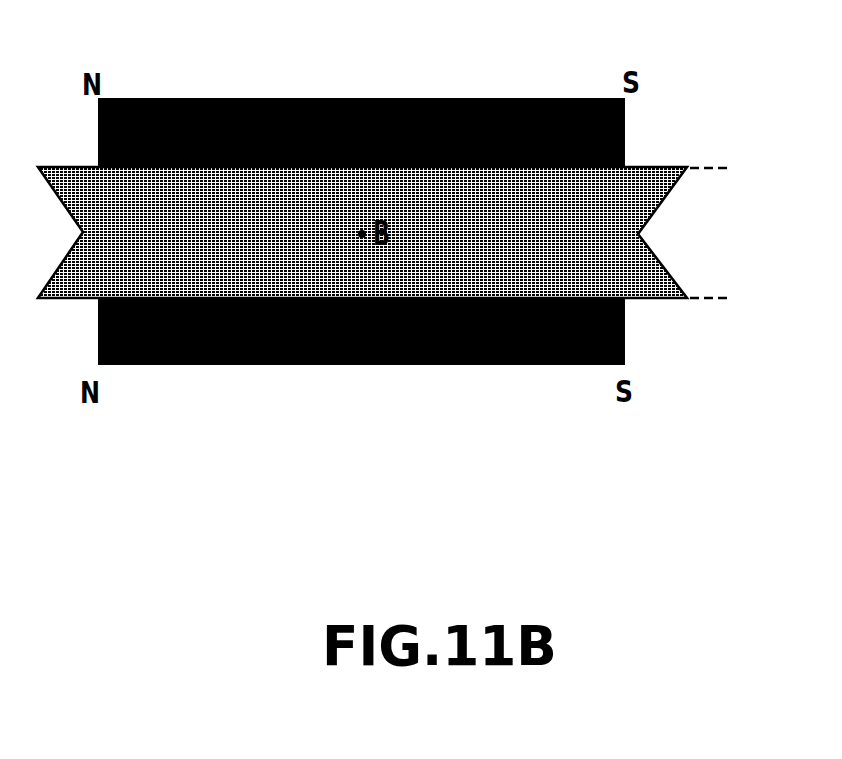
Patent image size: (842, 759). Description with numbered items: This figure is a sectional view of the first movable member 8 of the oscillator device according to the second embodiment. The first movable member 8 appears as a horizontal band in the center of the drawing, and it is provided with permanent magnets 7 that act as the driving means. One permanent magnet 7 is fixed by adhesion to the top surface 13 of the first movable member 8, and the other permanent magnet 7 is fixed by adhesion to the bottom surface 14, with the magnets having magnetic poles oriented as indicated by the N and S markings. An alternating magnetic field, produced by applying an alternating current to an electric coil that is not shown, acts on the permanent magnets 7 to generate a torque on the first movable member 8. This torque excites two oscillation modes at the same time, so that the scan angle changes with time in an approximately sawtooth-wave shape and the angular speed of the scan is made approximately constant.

The permanent magnet 7 is at (367, 98).
The first movable member 8 is at (517, 275).
The top surface 13 is at (706, 165).
The bottom surface 14 is at (706, 296).